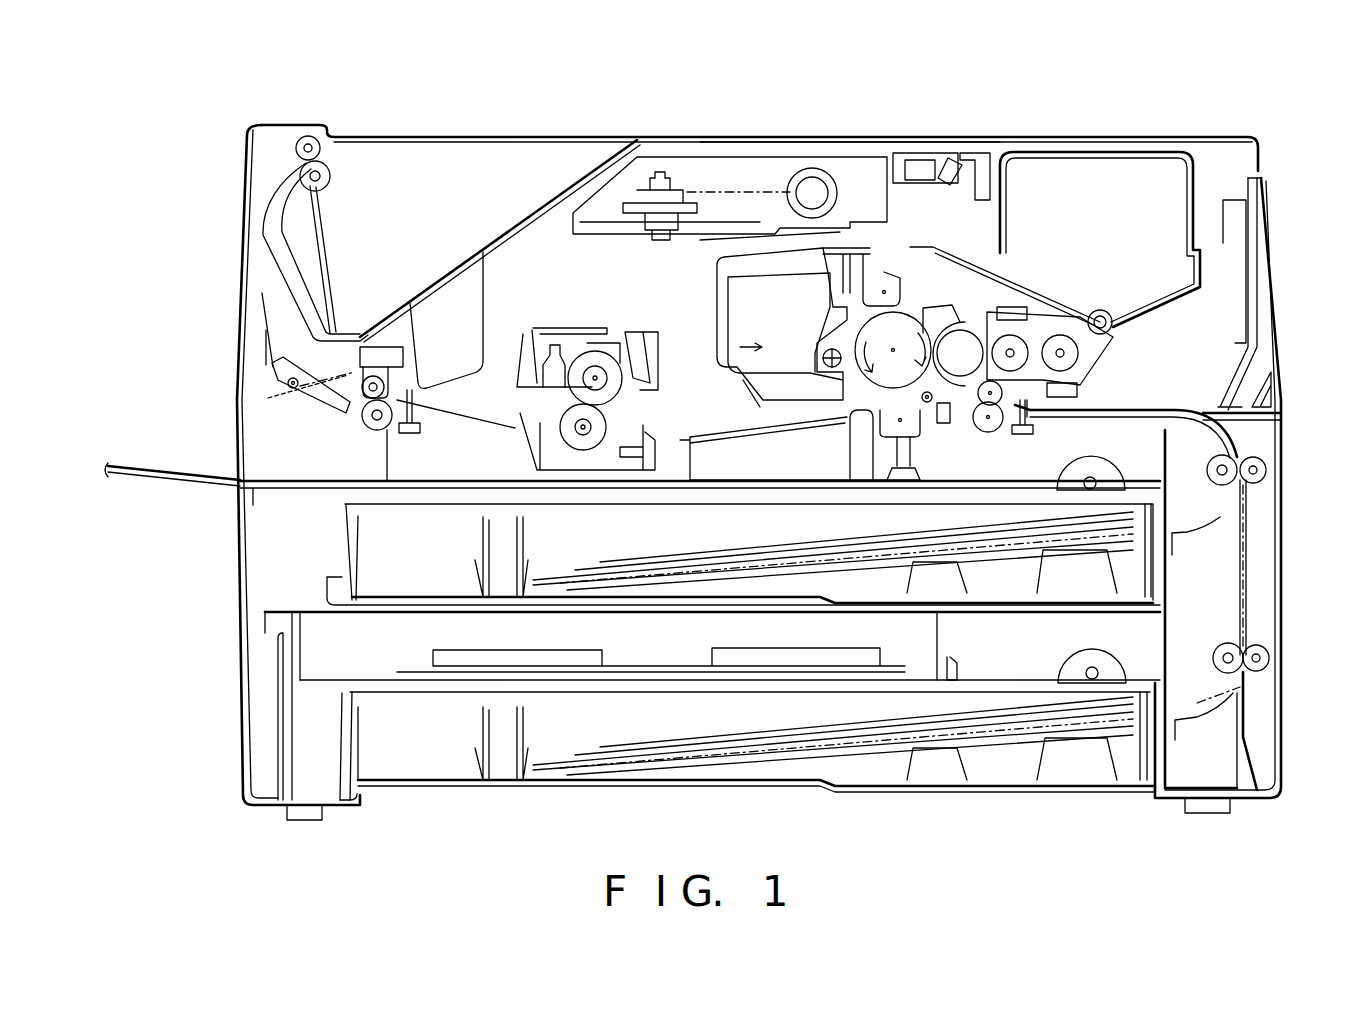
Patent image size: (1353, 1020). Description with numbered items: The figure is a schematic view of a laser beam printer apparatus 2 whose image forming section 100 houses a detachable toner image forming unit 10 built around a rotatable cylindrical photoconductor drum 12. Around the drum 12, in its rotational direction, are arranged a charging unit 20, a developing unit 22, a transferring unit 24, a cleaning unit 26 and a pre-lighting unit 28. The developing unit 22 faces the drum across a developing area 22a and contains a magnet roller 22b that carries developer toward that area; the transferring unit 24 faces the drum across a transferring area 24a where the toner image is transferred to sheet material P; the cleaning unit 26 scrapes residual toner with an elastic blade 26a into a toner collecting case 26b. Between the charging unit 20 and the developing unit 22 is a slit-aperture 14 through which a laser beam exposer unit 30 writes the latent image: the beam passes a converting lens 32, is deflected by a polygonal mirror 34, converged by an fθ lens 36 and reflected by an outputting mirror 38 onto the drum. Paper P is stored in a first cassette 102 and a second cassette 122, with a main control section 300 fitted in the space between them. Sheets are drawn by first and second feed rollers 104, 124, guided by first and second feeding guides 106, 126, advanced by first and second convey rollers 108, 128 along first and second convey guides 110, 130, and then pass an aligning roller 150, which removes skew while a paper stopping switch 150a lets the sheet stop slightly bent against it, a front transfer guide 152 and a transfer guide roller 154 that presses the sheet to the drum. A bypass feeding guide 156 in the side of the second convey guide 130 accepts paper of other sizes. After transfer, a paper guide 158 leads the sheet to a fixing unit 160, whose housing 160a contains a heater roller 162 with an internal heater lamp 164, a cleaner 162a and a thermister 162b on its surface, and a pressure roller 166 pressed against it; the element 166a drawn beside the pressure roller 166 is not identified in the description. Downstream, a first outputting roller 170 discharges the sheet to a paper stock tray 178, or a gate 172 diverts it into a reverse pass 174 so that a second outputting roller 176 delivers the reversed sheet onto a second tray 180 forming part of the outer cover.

The laser beam printer apparatus 2 is at (868, 132).
The toner image forming unit 10 is at (808, 290).
The photoconductor drum 12 is at (965, 340).
The slit-aperture 14 is at (908, 307).
The charging unit 20 is at (885, 262).
The developing unit 22 is at (992, 325).
The developing area 22a is at (932, 403).
The magnet roller 22b is at (993, 302).
The transferring unit 24 is at (882, 440).
The transferring area 24a is at (838, 416).
The cleaning unit 26 is at (765, 347).
The elastic blade 26a is at (847, 320).
The toner collecting case 26b is at (760, 420).
The pre-lighting unit 28 is at (848, 180).
The laser beam exposer unit 30 is at (693, 175).
The converting lens 32 is at (805, 168).
The polygonal mirror 34 is at (630, 175).
The fθ lens 36 is at (945, 163).
The outputting mirror 38 is at (975, 175).
The image forming section 100 is at (1250, 128).
The first cassette 102 is at (366, 555).
The first feed roller 104 is at (1095, 475).
The first feeding guide 106 is at (1193, 525).
The first convey roller 108 is at (1262, 468).
The first convey guide 110 is at (1250, 560).
The second cassette 122 is at (446, 776).
The second feed roller 124 is at (1070, 672).
The second feeding guide 126 is at (1200, 703).
The second convey roller 128 is at (1262, 658).
The second convey guide 130 is at (1190, 410).
The aligning roller 150 is at (991, 431).
The paper stopping switch 150a is at (1031, 428).
The front transfer guide 152 is at (1112, 312).
The transfer guide roller 154 is at (884, 367).
The bypass feeding guide 156 is at (1262, 272).
The paper guide 158 is at (760, 418).
The fixing unit 160 is at (553, 336).
The housing 160a is at (523, 337).
The heater roller 162 is at (594, 376).
The cleaner 162a is at (597, 352).
The thermister 162b is at (652, 356).
The heater lamp 164 is at (612, 350).
The pressure roller 166 is at (562, 415).
The feed roller housing 166a is at (636, 440).
The first outputting roller 170 is at (364, 417).
The gate 172 is at (275, 375).
The reverse pass 174 is at (268, 258).
The second outputting roller 176 is at (320, 124).
The paper stock tray 178 is at (165, 480).
The second tray 180 is at (462, 260).
The main control section 300 is at (395, 673).
The sheet material P is at (770, 546).